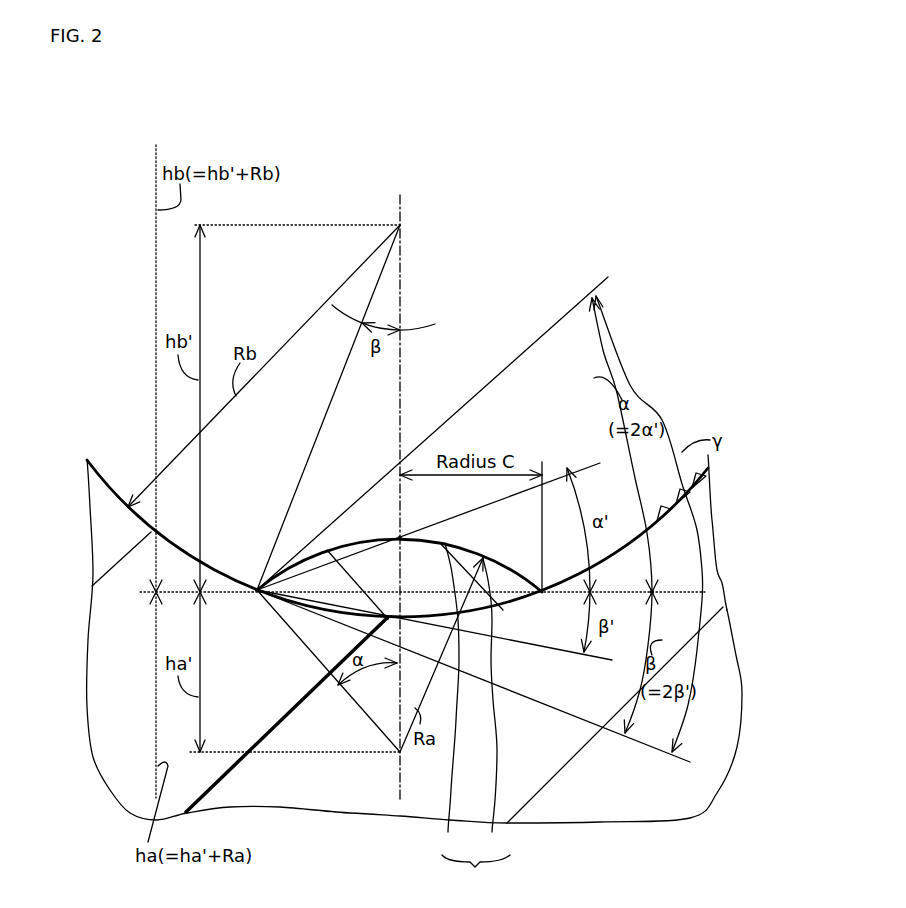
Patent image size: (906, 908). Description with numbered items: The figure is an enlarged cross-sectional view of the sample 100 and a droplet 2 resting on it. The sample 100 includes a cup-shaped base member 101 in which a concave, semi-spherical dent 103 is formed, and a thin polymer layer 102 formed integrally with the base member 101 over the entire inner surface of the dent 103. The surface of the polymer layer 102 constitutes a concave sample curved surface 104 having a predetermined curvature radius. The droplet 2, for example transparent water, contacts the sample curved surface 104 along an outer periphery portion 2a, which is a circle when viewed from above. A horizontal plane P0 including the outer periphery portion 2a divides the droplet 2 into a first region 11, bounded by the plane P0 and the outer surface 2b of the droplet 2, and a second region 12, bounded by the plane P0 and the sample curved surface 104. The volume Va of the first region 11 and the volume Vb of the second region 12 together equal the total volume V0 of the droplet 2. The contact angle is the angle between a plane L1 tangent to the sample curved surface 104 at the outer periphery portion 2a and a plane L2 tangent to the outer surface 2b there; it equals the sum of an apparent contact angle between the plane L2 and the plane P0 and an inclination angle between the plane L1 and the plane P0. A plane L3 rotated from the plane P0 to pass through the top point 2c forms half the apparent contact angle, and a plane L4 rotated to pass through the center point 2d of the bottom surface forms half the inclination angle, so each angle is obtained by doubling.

The droplet 2 is at (397, 538).
The outer periphery portion 2a is at (256, 589).
The outer surface 2b is at (338, 543).
The top point 2c is at (403, 538).
The center point of the bottom surface 2d is at (389, 621).
The first region 11 is at (436, 587).
The second region 12 is at (432, 616).
The sample 100 is at (722, 610).
The base member 101 is at (720, 578).
The polymer layer 102 is at (665, 509).
The dent 103 is at (683, 492).
The sample curved surface 104 is at (700, 475).
The plane L1 is at (527, 704).
The plane L2 is at (441, 414).
The plane L3 is at (548, 468).
The plane L4 is at (518, 648).
The plane P0 is at (614, 592).
The volume Va is at (454, 698).
The volume Vb is at (493, 704).
The volume V0 is at (476, 872).